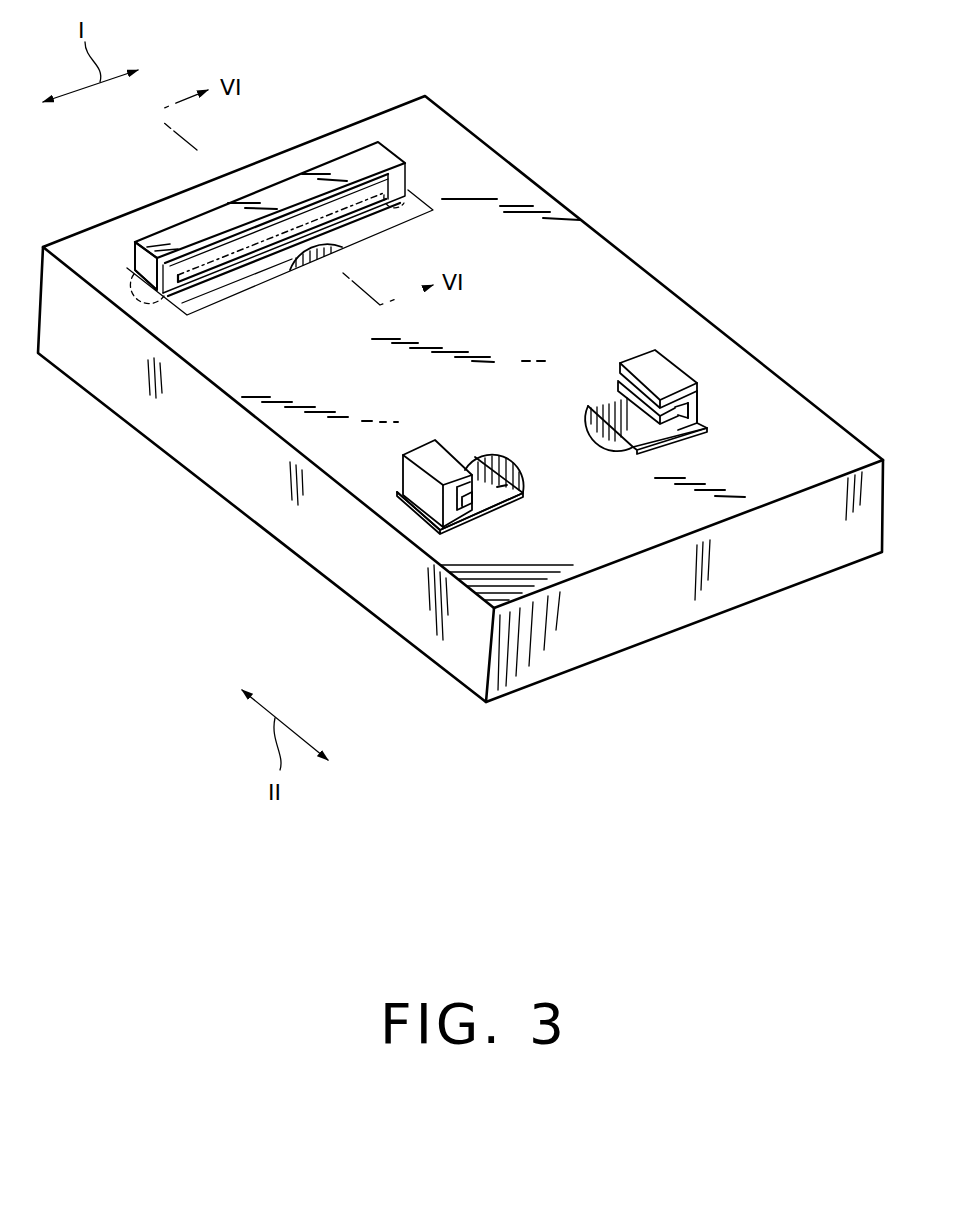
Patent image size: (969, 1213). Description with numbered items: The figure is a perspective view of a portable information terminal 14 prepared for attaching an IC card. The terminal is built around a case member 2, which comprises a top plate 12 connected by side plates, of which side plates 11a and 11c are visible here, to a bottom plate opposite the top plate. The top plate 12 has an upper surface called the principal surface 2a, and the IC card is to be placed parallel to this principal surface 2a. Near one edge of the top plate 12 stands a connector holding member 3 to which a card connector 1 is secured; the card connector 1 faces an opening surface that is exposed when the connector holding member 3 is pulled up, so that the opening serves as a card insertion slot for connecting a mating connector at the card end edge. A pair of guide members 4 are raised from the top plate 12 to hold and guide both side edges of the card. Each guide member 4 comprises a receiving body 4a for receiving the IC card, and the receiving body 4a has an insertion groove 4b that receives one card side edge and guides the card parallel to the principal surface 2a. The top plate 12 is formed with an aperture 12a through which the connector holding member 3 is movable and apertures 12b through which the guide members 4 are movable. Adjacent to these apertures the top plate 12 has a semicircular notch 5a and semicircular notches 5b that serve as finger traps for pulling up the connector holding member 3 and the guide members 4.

The card connector 1 is at (212, 262).
The case member 2 is at (517, 168).
The principal surface 2a is at (760, 407).
The connector holding member 3 is at (383, 143).
The guide members 4 is at (668, 356).
The receiving body 4a is at (698, 386).
The insertion groove 4b is at (618, 374).
The semicircular notch 5a is at (312, 270).
The semicircular notch 5b is at (605, 445).
The side plate 11a is at (715, 578).
The side plate 11c is at (412, 598).
The top plate 12 is at (797, 427).
The aperture 12a is at (367, 222).
The aperture 12b is at (527, 520).
The portable information terminal 14 is at (663, 245).